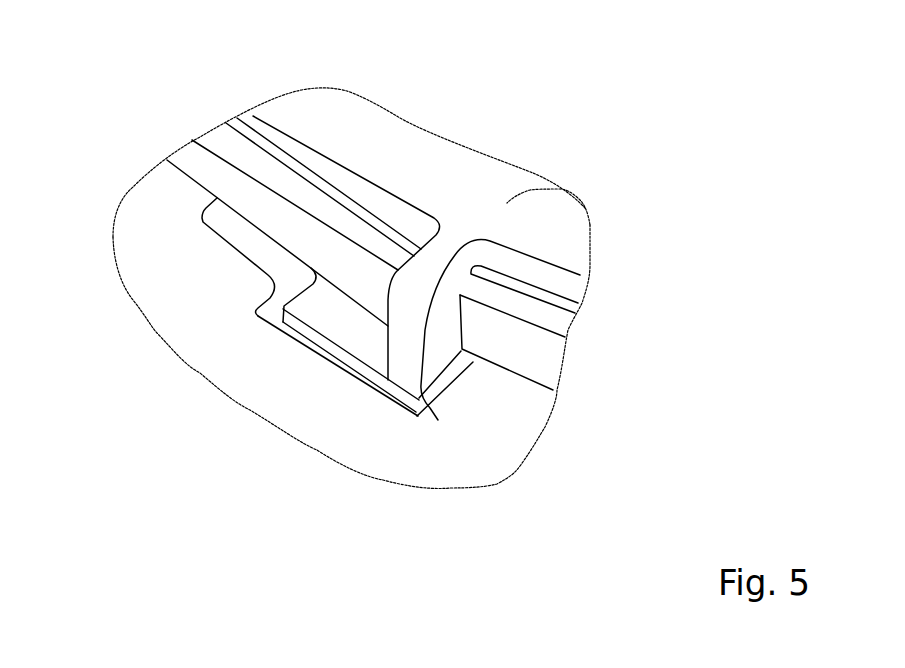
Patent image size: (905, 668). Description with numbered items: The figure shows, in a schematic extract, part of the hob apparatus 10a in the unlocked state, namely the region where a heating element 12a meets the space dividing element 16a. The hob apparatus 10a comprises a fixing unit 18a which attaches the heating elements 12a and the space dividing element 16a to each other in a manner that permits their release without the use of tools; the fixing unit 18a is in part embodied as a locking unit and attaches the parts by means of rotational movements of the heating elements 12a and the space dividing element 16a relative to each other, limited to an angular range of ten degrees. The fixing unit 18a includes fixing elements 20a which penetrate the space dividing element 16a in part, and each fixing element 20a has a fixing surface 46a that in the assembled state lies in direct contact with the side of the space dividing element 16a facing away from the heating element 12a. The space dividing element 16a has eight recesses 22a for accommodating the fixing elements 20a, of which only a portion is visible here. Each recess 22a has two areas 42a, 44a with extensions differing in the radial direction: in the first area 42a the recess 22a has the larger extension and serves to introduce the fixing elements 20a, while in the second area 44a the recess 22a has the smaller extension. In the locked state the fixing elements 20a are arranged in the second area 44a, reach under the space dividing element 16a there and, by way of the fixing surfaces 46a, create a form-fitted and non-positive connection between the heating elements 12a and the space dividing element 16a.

The hob apparatus 10a is at (351, 250).
The heating element 12a is at (565, 190).
The space dividing element 16a is at (513, 407).
The fixing unit 18a is at (427, 437).
The fixing element 20a is at (403, 360).
The recess 22a is at (236, 236).
The first area 42a is at (281, 357).
The second area 44a is at (233, 262).
The fixing surface 46a is at (332, 326).